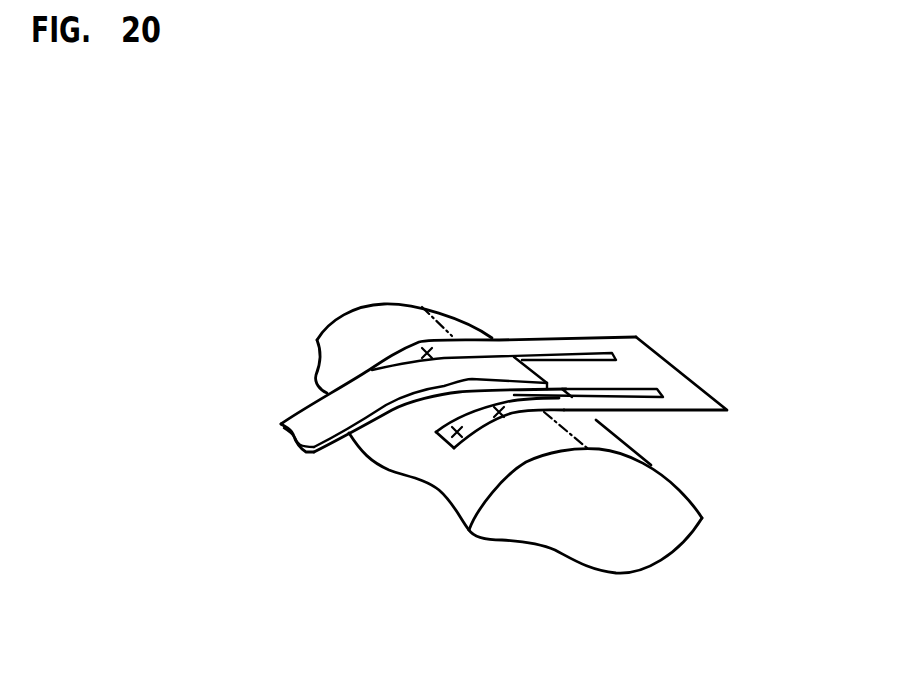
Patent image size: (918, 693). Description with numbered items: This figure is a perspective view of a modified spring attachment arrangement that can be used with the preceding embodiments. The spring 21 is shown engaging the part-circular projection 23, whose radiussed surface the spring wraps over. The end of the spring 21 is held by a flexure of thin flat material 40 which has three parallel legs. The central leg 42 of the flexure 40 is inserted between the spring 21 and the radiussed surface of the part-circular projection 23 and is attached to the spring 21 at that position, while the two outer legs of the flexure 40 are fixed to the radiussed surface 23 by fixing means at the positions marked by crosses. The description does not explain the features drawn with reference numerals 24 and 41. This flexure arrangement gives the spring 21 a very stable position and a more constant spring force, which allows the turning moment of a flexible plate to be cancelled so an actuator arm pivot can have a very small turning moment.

The spring 21 is at (320, 422).
The part-circular projection 23 is at (638, 517).
The slot 24 is at (490, 372).
The flexure of thin flat material 40 is at (670, 382).
The fastening patch 41 is at (403, 355).
The central leg 42 is at (580, 382).